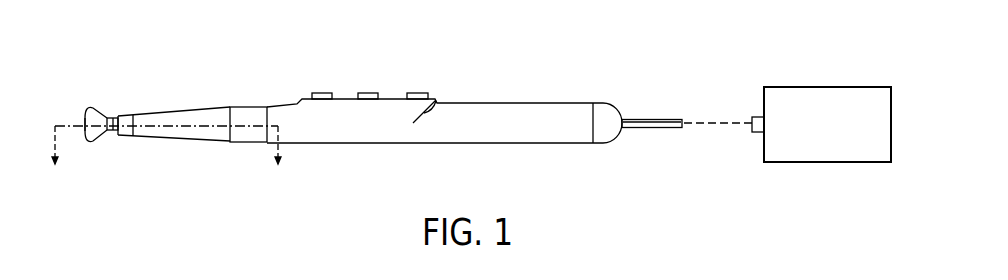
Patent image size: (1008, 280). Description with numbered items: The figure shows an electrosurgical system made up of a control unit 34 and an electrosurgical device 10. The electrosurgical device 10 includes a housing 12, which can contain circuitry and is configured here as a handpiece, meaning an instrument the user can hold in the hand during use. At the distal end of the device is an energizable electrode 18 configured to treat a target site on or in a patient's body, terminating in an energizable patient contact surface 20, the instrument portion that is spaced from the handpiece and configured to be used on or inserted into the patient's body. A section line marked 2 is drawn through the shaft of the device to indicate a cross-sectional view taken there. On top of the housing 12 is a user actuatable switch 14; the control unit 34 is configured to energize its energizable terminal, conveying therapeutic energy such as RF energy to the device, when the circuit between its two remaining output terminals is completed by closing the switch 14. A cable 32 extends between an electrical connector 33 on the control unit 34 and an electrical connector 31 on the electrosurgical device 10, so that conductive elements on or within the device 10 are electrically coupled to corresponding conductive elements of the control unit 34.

The section line 2- 2 is at (167, 161).
The electrosurgical device 10 is at (366, 101).
The housing 12 is at (393, 130).
The user actuatable switch 14 is at (322, 92).
The energizable electrode 18 is at (110, 101).
The energizable patient contact surface 20 is at (87, 116).
The electrical connector 31 is at (622, 113).
The cable 32 is at (697, 122).
The electrical connector 33 is at (752, 127).
The control unit 34 is at (827, 147).